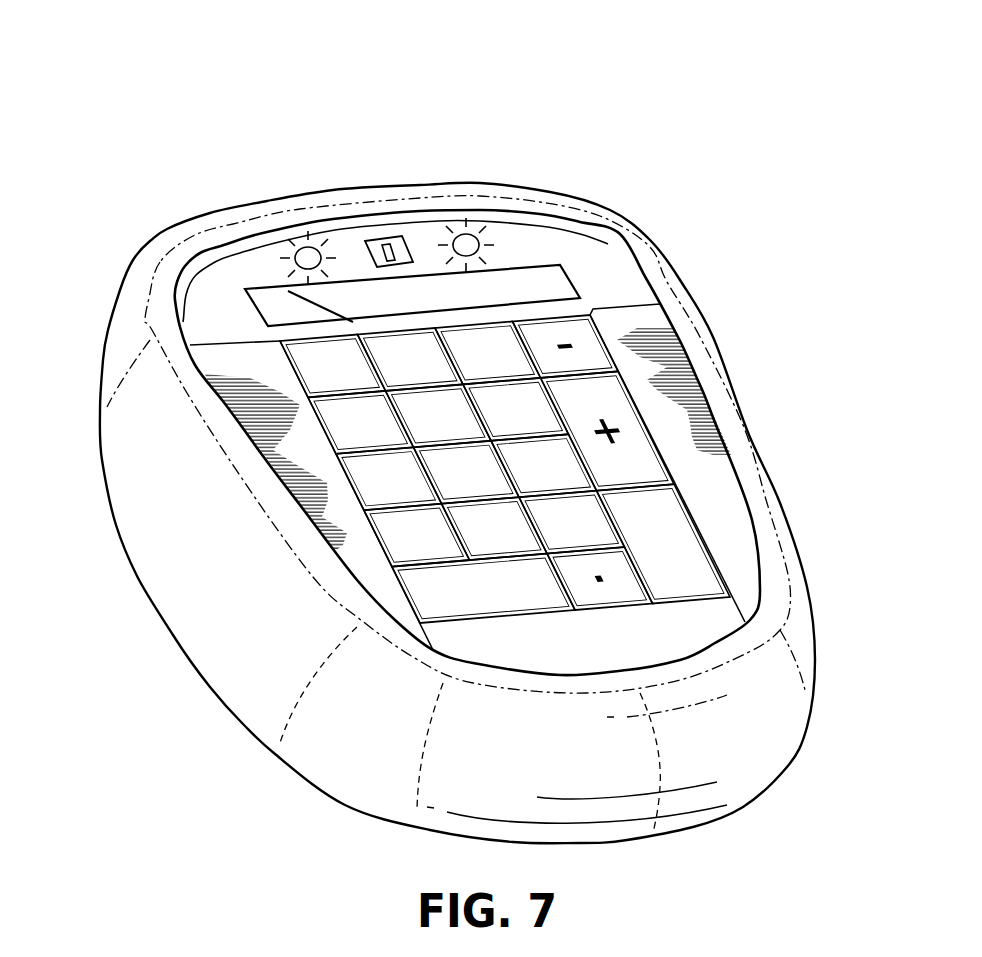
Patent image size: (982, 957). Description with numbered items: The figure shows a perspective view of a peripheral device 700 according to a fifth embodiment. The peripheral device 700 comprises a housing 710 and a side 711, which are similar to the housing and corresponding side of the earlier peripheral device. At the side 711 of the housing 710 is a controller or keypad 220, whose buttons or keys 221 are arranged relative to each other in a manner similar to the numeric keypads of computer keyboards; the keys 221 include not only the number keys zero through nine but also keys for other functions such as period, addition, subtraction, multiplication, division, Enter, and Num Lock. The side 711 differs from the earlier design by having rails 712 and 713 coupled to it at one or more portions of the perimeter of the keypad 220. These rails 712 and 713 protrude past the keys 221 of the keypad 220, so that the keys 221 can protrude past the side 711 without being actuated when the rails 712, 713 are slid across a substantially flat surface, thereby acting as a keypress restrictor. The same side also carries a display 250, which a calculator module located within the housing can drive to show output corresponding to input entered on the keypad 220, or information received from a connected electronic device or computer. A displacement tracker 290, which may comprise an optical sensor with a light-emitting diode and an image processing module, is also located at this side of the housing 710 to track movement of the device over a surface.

The peripheral device 700 is at (437, 43).
The housing 710 is at (718, 397).
The side 711 is at (230, 278).
The rail 712 is at (233, 362).
The rail 713 is at (650, 322).
The display 250 is at (563, 283).
The displacement tracker 290 is at (399, 240).
The keypad 220 is at (380, 535).
The keys 221 is at (457, 605).